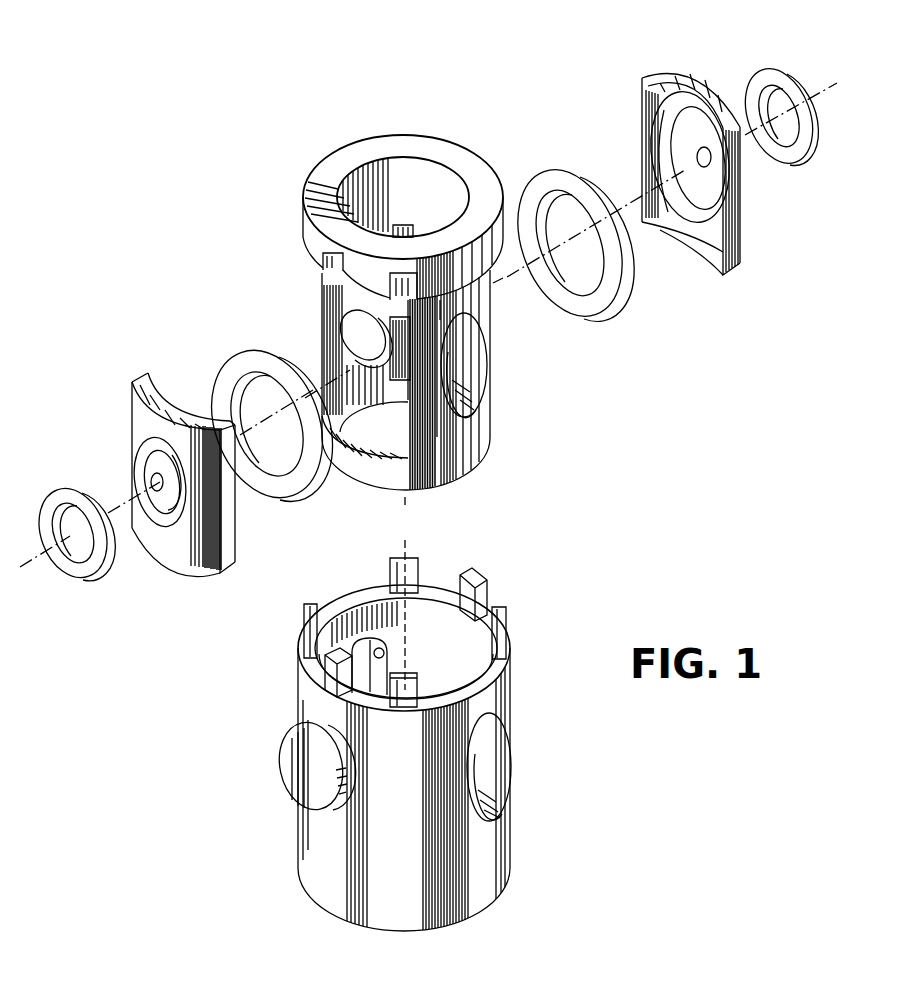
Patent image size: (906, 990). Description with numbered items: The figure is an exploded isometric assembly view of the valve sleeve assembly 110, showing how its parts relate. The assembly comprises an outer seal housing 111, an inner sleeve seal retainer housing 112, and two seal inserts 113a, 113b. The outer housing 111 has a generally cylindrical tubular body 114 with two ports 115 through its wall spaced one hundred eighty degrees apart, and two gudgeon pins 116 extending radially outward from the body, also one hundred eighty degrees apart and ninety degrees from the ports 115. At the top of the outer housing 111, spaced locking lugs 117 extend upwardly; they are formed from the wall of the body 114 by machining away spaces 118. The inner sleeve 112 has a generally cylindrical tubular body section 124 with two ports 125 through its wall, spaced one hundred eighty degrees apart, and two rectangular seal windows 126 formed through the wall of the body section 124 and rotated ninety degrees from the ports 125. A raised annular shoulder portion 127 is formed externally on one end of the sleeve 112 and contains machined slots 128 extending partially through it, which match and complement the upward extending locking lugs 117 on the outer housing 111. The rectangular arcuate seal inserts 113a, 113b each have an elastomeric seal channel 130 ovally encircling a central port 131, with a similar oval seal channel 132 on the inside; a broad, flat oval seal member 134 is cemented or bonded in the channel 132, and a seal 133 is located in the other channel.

The valve sleeve assembly 110 is at (553, 511).
The outer seal housing 111 is at (522, 836).
The inner sleeve seal retainer housing 112 is at (494, 409).
The seal insert 113a is at (138, 413).
The seal insert 113b is at (662, 72).
The cylindrical tubular body 114 is at (323, 837).
The port 115 is at (380, 653).
The gudgeon pin 116 is at (293, 768).
The locking lug 117 is at (500, 606).
The space 118 is at (352, 597).
The cylindrical tubular body section 124 is at (470, 295).
The port 125 is at (348, 316).
The rectangular seal window 126 is at (415, 223).
The raised annular shoulder portion 127 is at (315, 246).
The machined slot 128 is at (327, 278).
The elastomeric seal channel 130 is at (157, 518).
The central port 131 is at (155, 482).
The oval seal channel 132 is at (677, 105).
The seal 133 is at (82, 575).
The flat oval seal member 134 is at (226, 362).